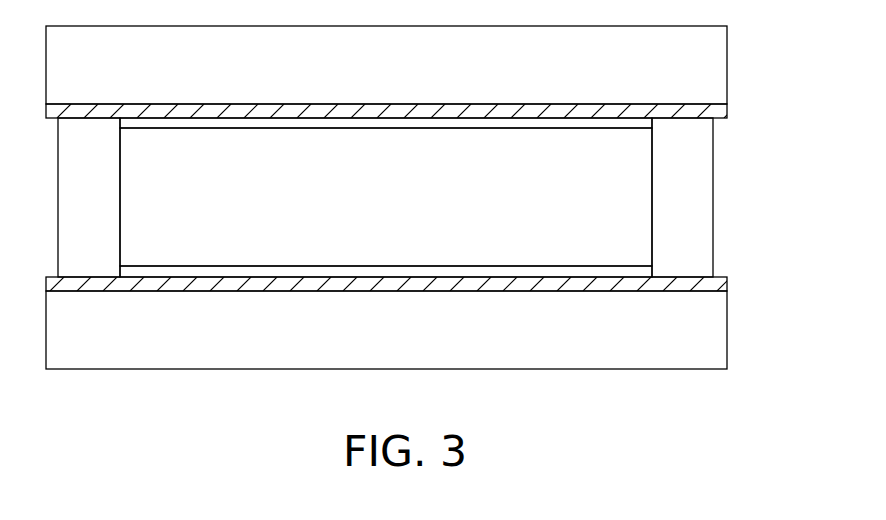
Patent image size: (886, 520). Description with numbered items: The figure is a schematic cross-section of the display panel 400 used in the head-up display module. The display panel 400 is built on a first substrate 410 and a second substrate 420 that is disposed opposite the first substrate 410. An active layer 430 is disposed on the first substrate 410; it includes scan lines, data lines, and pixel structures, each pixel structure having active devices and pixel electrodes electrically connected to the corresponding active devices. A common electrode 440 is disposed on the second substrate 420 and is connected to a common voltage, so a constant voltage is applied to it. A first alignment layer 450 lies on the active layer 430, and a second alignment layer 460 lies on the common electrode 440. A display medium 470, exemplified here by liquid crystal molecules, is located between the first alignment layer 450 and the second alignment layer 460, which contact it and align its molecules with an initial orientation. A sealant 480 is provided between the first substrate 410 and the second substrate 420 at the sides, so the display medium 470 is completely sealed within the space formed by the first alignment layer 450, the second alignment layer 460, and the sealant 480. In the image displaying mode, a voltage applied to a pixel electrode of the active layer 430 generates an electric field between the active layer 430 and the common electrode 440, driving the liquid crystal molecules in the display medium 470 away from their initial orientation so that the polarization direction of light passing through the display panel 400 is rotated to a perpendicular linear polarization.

The display panel 400 is at (405, 229).
The first substrate 410 is at (715, 330).
The second substrate 420 is at (717, 67).
The active layer 430 is at (718, 283).
The common electrode 440 is at (716, 110).
The first alignment layer 450 is at (645, 270).
The second alignment layer 460 is at (645, 122).
The display medium 470 is at (638, 215).
The sealant 480 is at (698, 182).